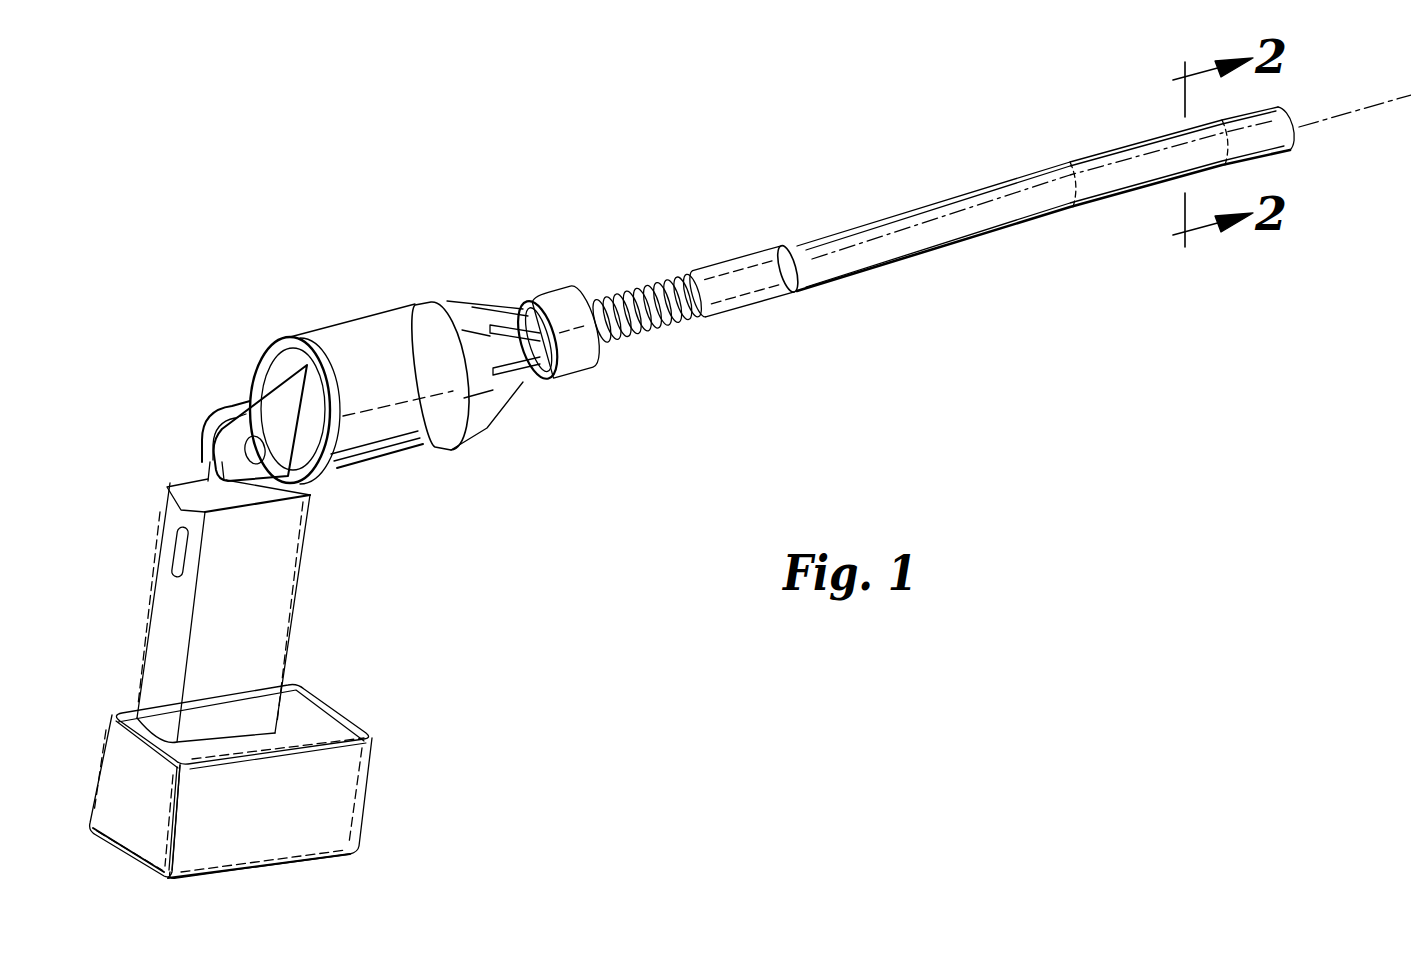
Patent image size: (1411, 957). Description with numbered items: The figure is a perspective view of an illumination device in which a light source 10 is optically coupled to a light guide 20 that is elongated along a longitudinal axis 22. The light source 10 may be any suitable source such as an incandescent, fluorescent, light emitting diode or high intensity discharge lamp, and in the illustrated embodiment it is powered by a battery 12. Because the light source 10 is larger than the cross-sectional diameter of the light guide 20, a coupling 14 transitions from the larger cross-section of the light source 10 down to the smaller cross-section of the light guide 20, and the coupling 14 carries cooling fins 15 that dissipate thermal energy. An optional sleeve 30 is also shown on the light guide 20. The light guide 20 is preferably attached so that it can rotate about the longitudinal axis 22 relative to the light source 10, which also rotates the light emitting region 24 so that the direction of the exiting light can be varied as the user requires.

The light source 10 is at (363, 333).
The battery 12 is at (352, 790).
The coupling 14 is at (483, 338).
The cooling fins 15 is at (507, 328).
The light guide 20 is at (1104, 172).
The longitudinal axis 22 is at (1320, 118).
The light emitting region 24 is at (1147, 153).
The sleeve 30 is at (640, 280).